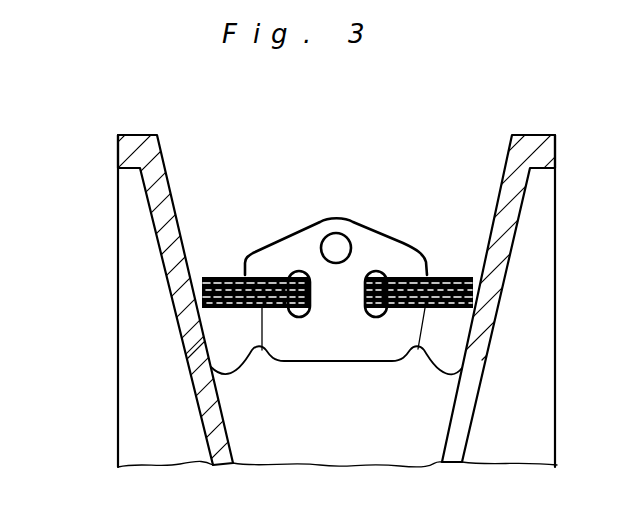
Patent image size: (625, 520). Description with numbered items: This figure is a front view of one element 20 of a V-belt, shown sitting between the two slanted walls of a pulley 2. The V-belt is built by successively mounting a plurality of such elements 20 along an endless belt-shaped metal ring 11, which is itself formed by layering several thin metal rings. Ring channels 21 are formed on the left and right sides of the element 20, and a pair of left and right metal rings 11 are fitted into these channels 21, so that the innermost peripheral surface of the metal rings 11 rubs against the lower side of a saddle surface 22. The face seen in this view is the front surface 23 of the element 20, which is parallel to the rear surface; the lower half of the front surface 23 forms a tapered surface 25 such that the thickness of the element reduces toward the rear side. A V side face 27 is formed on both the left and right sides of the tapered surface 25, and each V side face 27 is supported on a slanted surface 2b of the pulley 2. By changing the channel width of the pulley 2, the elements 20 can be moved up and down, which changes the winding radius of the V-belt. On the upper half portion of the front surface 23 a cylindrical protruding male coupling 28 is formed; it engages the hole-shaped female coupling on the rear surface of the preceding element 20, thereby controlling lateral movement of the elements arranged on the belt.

The pulley 2 is at (162, 153).
The slanted surface 2b is at (225, 422).
The metal ring 11 is at (225, 277).
The element 20 is at (374, 227).
The ring channel 21 is at (284, 274).
The saddle surface 22 is at (262, 350).
The front surface 23 is at (300, 241).
The tapered surface 25 is at (325, 351).
The V side face 27 is at (187, 337).
The male coupling 28 is at (336, 233).